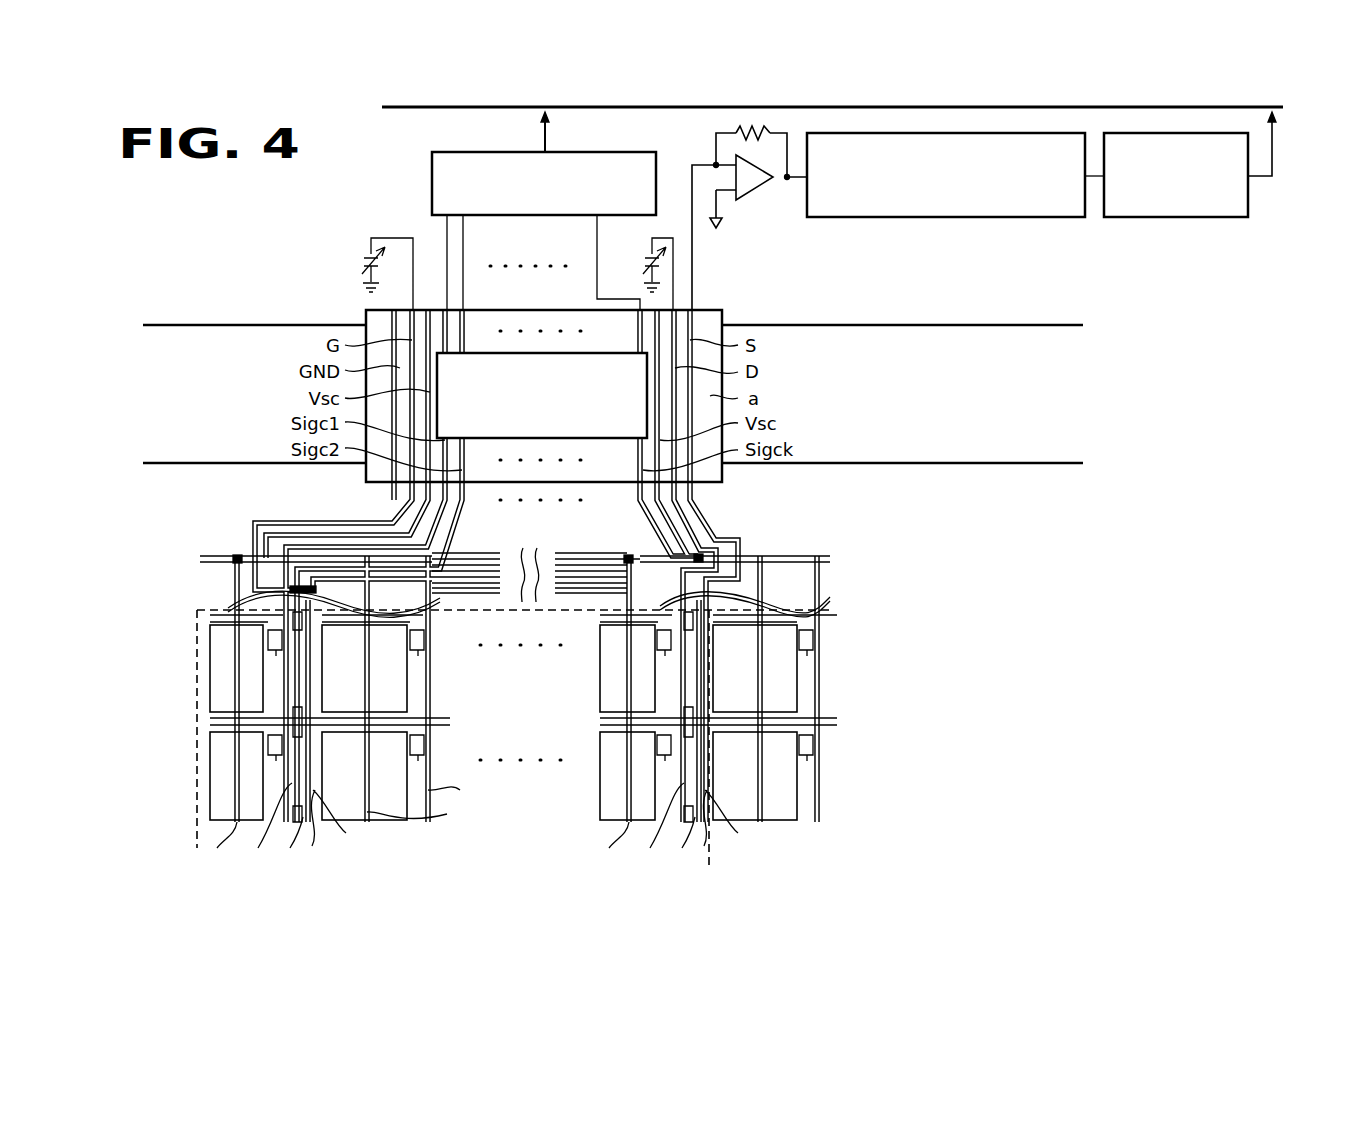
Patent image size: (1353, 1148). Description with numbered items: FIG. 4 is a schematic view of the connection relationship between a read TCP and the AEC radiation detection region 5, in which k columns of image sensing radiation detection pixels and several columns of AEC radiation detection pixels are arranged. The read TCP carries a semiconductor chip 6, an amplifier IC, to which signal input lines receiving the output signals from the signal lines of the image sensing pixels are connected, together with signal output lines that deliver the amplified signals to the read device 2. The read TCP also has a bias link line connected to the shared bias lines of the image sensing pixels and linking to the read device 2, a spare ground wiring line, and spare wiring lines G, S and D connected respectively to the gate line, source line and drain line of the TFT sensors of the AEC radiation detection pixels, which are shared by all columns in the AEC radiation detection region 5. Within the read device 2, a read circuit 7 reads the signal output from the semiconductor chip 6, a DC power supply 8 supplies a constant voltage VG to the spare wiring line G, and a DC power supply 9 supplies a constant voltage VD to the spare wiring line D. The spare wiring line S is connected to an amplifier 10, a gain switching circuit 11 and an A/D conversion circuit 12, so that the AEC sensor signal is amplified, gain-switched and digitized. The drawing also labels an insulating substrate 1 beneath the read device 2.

The insulating substrate 1 is at (1041, 460).
The read device 2 is at (1040, 340).
The AEC radiation detection region 5 is at (709, 856).
The semiconductor chip 6 is at (598, 351).
The read circuit 7 is at (432, 181).
The DC power supply 8 is at (356, 264).
The DC power supply 9 is at (640, 264).
The amplifier 10 is at (762, 196).
The gain switching circuit 11 is at (946, 218).
The A/D conversion circuit 12 is at (1174, 218).